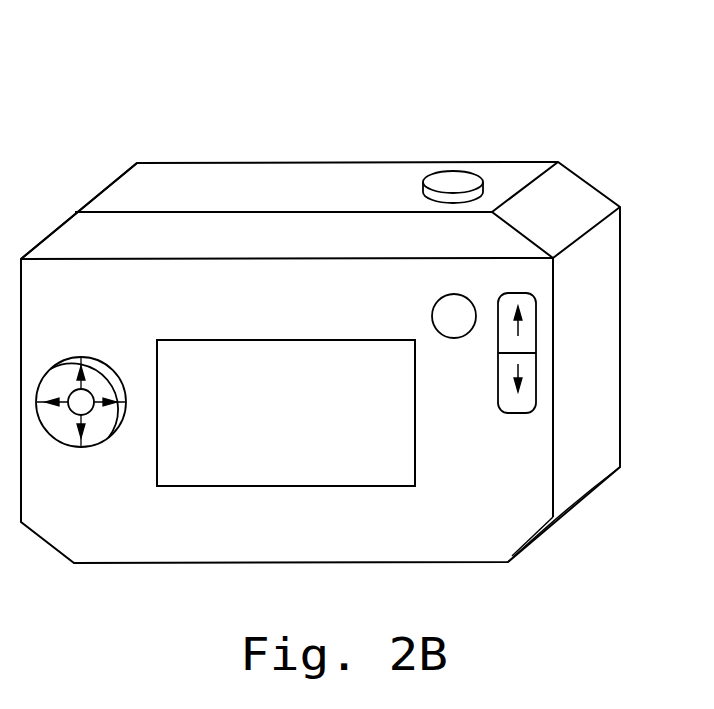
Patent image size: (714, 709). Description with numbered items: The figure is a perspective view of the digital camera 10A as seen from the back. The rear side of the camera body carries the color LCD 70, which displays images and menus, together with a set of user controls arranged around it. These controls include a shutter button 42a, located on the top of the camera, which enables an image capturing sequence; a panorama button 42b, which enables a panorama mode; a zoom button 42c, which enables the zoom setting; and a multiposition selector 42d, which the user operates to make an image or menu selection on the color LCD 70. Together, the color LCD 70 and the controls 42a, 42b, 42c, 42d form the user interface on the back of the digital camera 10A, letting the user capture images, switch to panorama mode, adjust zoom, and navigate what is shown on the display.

The digital camera 10A is at (524, 98).
The shutter button 42a is at (470, 178).
The panorama button 42b is at (447, 339).
The zoom button 42c is at (533, 348).
The multiposition selector 42d is at (82, 446).
The color LCD 70 is at (200, 487).